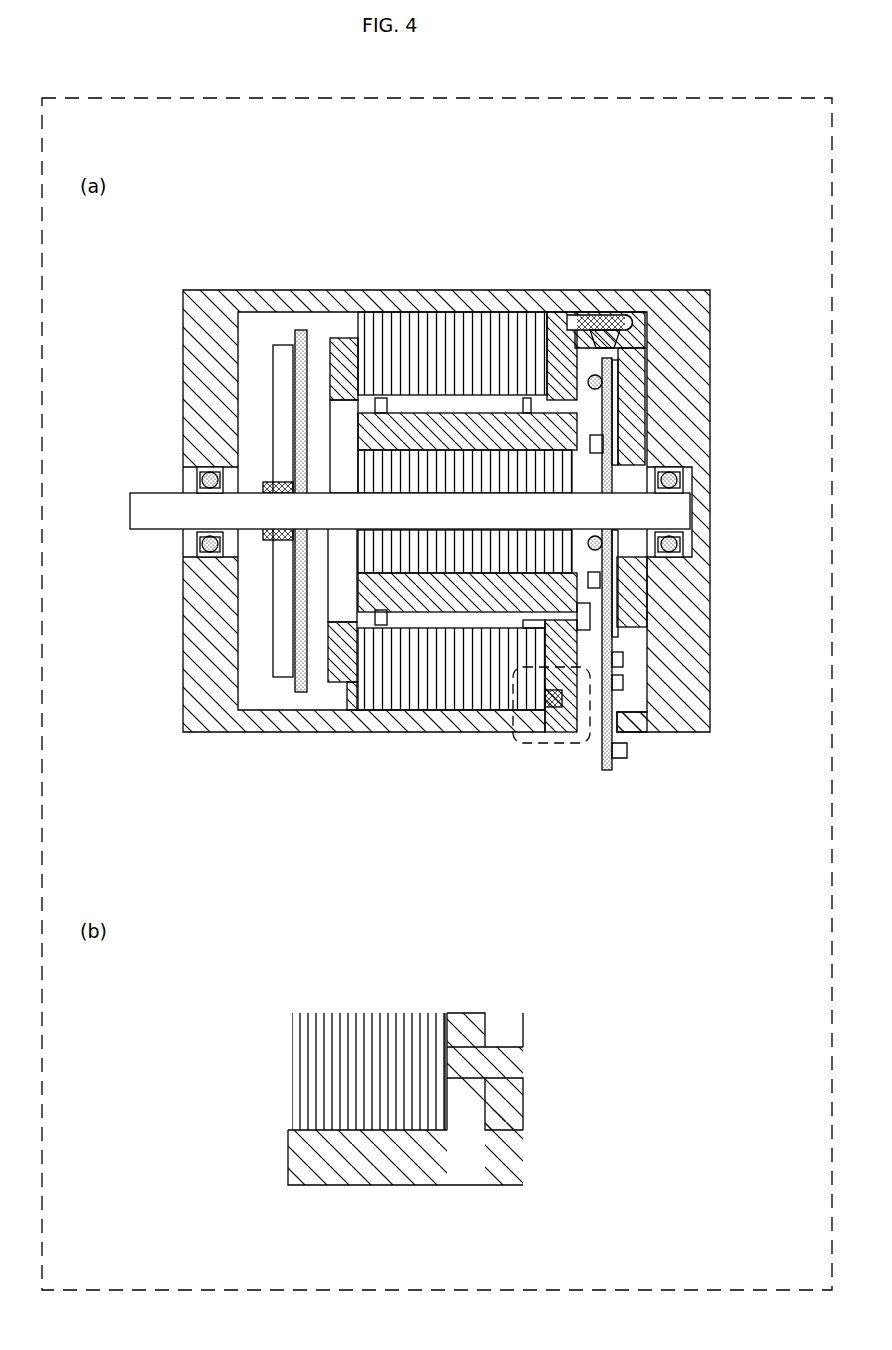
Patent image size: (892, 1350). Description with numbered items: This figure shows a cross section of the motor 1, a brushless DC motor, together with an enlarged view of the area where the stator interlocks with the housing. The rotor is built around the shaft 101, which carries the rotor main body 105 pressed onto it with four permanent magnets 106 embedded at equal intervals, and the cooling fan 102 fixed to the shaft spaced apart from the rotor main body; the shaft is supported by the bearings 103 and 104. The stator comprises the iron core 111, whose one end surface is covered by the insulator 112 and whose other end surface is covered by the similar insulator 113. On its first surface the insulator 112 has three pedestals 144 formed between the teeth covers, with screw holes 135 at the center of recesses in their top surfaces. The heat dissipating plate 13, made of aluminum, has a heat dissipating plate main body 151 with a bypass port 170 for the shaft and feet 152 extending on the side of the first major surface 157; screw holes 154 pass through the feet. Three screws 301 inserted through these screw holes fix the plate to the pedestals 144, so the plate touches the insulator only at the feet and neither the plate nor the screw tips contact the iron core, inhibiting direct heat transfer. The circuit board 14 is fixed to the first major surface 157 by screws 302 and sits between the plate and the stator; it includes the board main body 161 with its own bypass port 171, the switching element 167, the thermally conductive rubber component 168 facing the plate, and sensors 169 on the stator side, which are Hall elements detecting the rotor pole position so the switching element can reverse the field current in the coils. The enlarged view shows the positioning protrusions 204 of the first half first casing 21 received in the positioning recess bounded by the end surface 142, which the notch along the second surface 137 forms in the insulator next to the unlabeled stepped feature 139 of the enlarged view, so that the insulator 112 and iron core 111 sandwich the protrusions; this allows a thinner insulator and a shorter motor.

The motor 1 is at (133, 243).
The first half first casing 21 is at (210, 300).
The circuit board 14 is at (640, 690).
The heat dissipating plate 13 is at (657, 333).
The shaft 101 is at (155, 497).
The cooling fan 102 is at (286, 352).
The bearing 103 is at (685, 475).
The bearing 104 is at (195, 545).
The rotor main body 105 is at (478, 472).
The permanent magnet 106 is at (407, 423).
The iron core 111 is at (445, 340).
The insulator 112 is at (556, 345).
The insulator 113 is at (346, 352).
The screw hole 135 is at (594, 275).
The second surface 137 is at (450, 1045).
The core step 139 is at (467, 1078).
The end surface 142 is at (485, 1107).
The pedestal 144 is at (595, 332).
The heat dissipating plate main body 151 is at (612, 425).
The foot 152 is at (614, 330).
The screw hole 154 is at (603, 340).
The first major surface 157 is at (625, 660).
The board main body 161 is at (620, 760).
The switching element 167 is at (625, 684).
The rubber component 168 is at (600, 580).
The sensor 169 is at (590, 628).
The bypass port 170 is at (683, 547).
The bypass port 171 is at (615, 480).
The positioning protrusion 204 is at (557, 700).
The screw 301 is at (640, 335).
The screw 302 is at (602, 382).